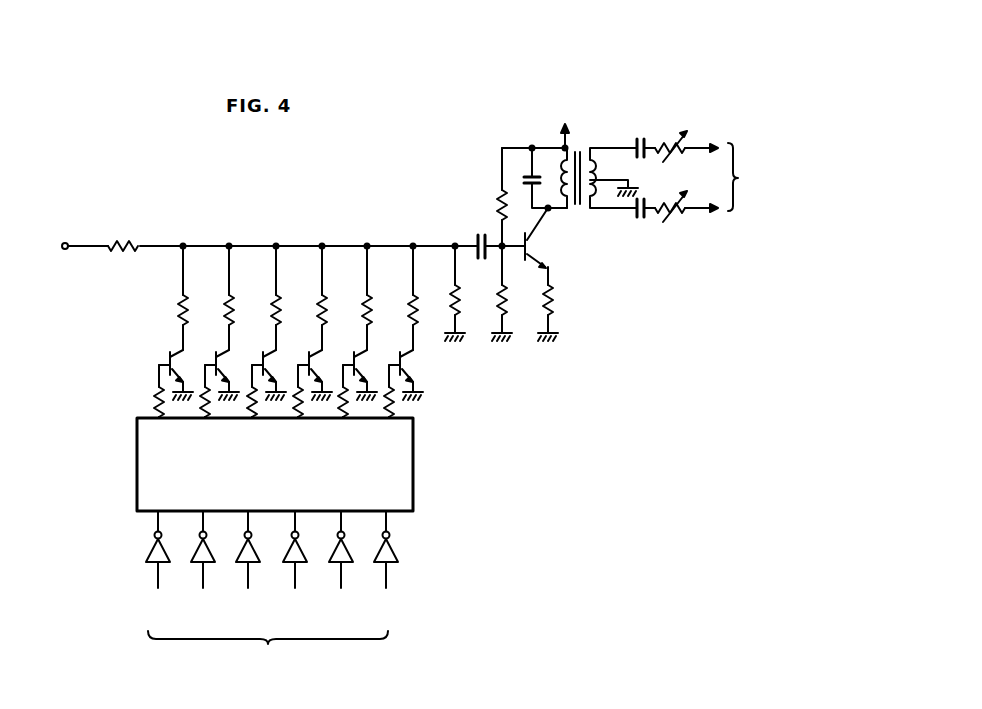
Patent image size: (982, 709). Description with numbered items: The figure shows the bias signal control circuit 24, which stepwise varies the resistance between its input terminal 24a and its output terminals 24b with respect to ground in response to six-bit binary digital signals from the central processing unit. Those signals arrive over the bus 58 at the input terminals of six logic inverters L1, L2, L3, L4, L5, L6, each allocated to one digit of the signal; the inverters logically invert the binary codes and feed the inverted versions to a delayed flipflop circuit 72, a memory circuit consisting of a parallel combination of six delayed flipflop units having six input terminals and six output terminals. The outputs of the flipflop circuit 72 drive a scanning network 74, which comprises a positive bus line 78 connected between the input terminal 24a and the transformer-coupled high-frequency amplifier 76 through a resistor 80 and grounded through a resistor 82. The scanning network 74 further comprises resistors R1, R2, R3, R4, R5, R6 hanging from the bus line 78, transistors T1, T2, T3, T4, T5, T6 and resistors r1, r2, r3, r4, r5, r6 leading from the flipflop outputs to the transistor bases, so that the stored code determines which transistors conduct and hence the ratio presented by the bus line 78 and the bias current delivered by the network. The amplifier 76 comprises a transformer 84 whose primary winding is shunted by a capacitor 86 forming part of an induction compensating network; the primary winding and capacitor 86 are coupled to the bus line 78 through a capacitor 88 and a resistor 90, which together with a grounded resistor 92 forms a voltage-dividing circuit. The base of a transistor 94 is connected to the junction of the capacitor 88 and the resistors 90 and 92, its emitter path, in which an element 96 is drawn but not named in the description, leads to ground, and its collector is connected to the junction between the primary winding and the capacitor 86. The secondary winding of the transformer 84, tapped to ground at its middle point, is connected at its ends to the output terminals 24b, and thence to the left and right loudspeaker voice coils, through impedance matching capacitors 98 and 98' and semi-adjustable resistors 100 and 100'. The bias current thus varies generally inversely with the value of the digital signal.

The input terminal 24a is at (66, 242).
The resistor 80 is at (128, 239).
The positive bus line 78 is at (306, 246).
The scanning network 74 is at (158, 316).
The resistor R6 is at (180, 297).
The resistor R5 is at (226, 297).
The resistor R4 is at (273, 297).
The resistor R3 is at (319, 297).
The resistor R2 is at (364, 297).
The resistor R1 is at (410, 297).
The transistor T6 is at (168, 358).
The transistor T5 is at (215, 358).
The transistor T4 is at (262, 358).
The transistor T3 is at (308, 358).
The transistor T2 is at (354, 358).
The transistor T1 is at (400, 358).
The resistor r6 is at (152, 396).
The resistor r5 is at (202, 391).
The resistor r4 is at (248, 391).
The resistor r3 is at (294, 391).
The resistor r2 is at (340, 391).
The resistor r1 is at (397, 398).
The delayed flipflop circuit 72 is at (137, 468).
The bias signal control circuit 24 is at (420, 449).
The logic inverter L6 is at (153, 537).
The logic inverter L5 is at (199, 536).
The logic inverter L4 is at (245, 536).
The logic inverter L3 is at (292, 538).
The logic inverter L2 is at (337, 538).
The logic inverter L1 is at (382, 538).
The bus 58 is at (268, 653).
The capacitor 88 is at (474, 237).
The resistor 82 is at (460, 303).
The resistor 92 is at (508, 303).
The resistor 90 is at (498, 206).
The capacitor 86 is at (525, 171).
The transistor 94 is at (546, 251).
The emitter resistor 96 is at (558, 301).
The transformer 84 is at (575, 209).
The transformer-coupled high-frequency amplifier 76 is at (613, 222).
The impedance matching capacitor 98 is at (633, 130).
The semi-adjustable resistor 100 is at (690, 132).
The impedance matching capacitor 98' is at (664, 232).
The semi-adjustable resistor 100' is at (703, 218).
The output terminal 24b is at (754, 177).